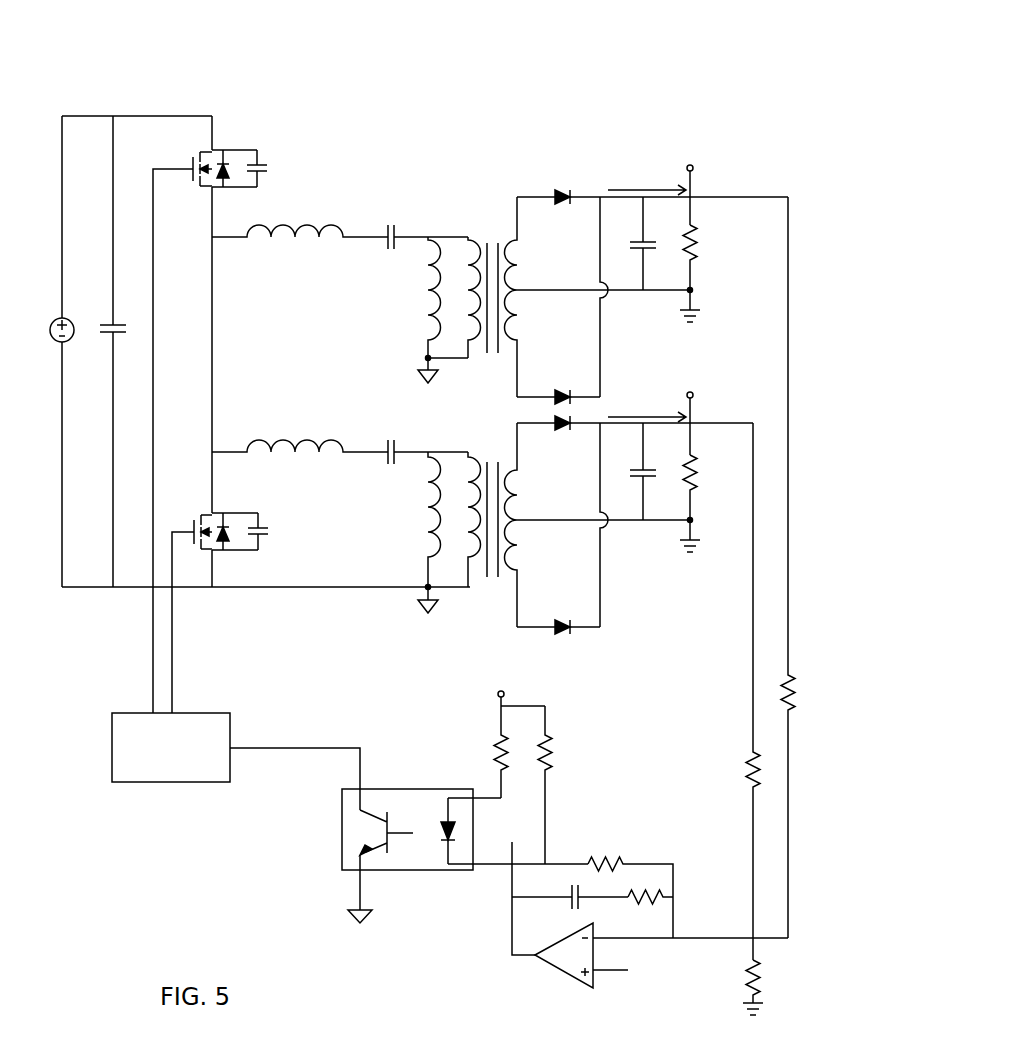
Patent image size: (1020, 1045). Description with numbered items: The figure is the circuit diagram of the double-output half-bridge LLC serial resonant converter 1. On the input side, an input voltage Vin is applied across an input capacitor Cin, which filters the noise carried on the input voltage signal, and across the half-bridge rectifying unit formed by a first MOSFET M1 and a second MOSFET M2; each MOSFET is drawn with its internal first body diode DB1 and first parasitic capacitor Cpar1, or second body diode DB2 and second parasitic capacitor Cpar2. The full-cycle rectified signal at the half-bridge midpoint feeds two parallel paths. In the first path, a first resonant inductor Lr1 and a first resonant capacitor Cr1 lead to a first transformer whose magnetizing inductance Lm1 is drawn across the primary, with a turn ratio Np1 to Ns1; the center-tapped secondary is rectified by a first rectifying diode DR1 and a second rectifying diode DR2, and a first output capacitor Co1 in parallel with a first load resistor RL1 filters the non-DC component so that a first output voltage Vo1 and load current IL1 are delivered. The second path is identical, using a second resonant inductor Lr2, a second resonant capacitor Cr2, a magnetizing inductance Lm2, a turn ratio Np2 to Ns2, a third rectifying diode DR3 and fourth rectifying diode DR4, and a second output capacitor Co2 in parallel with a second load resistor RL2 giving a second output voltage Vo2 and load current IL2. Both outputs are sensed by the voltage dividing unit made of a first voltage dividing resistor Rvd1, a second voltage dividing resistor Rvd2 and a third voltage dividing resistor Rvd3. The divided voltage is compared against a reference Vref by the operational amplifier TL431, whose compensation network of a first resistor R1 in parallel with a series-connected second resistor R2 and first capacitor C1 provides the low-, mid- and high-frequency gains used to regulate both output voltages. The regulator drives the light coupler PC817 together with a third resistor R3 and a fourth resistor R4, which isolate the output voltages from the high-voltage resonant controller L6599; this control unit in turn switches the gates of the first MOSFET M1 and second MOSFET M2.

The double-output half-bridge LLC serial resonant converter 1 is at (115, 31).
The input voltage source Vin is at (50, 330).
The input capacitor Cin is at (121, 351).
The first MOSFET M1 is at (182, 432).
The first body diode DB1 is at (234, 171).
The first parasitic capacitor Cpar1 is at (274, 168).
The second MOSFET M2 is at (192, 614).
The second body diode DB2 is at (235, 534).
The second parasitic capacitor Cpar2 is at (275, 531).
The first resonant inductor Lr1 is at (300, 218).
The first resonant capacitor Cr1 is at (422, 224).
The first magnetizing inductor Lm1 is at (430, 310).
The primary side coil turns of the first transformer unit Np1 is at (477, 314).
The secondary side coil turns of the first transformer unit Ns1 is at (598, 297).
The first rectifying diode DR1 is at (652, 187).
The second rectifying diode DR2 is at (562, 300).
The first output capacitor Co1 is at (631, 243).
The first load resistor RL1 is at (704, 273).
The first output voltage Vo1 is at (692, 184).
The first load current IL1 is at (647, 181).
The second resonant inductor Lr2 is at (300, 434).
The second resonant capacitor Cr2 is at (422, 438).
The second magnetizing inductor Lm2 is at (416, 532).
The primary side coil turns of the second transformer unit Np2 is at (477, 535).
The secondary side coil turns of the second transformer unit Ns2 is at (598, 525).
The third rectifying diode DR3 is at (635, 436).
The fourth rectifying diode DR4 is at (562, 528).
The second output capacitor Co2 is at (631, 471).
The second load resistor RL2 is at (704, 503).
The second output voltage Vo2 is at (692, 413).
The second load current IL2 is at (647, 408).
The first voltage dividing resistor Rvd1 is at (733, 691).
The second voltage dividing resistor Rvd2 is at (806, 567).
The third voltage dividing resistor Rvd3 is at (771, 987).
The resonant controller IC L6599 is at (203, 763).
The light coupler PC817 is at (440, 809).
The first resistor R1 is at (630, 888).
The second resistor R2 is at (650, 888).
The third resistor R3 is at (554, 785).
The fourth resistor R4 is at (519, 744).
The first capacitor C1 is at (570, 898).
The operational amplifier TL431 is at (652, 960).
The reference voltage Vref is at (645, 972).